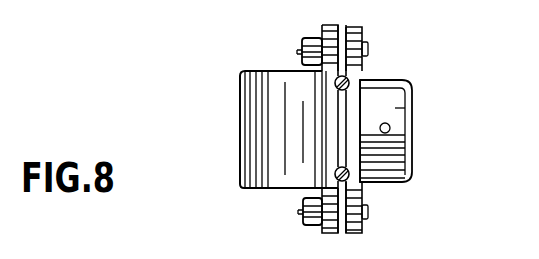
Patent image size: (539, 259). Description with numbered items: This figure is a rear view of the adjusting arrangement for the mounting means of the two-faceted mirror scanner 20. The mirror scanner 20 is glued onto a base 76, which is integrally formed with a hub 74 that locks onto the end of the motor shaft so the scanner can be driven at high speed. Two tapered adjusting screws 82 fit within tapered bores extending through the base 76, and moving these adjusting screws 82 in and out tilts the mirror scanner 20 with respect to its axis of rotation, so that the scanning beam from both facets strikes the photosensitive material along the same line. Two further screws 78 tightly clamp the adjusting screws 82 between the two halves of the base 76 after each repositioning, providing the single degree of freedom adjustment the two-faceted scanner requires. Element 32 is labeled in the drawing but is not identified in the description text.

The mirror scanner 20 is at (232, 113).
The housing body 32 is at (263, 159).
The hub 74 is at (413, 107).
The base 76 is at (363, 222).
The screws 78 is at (301, 50).
The adjusting screws 82 is at (349, 80).